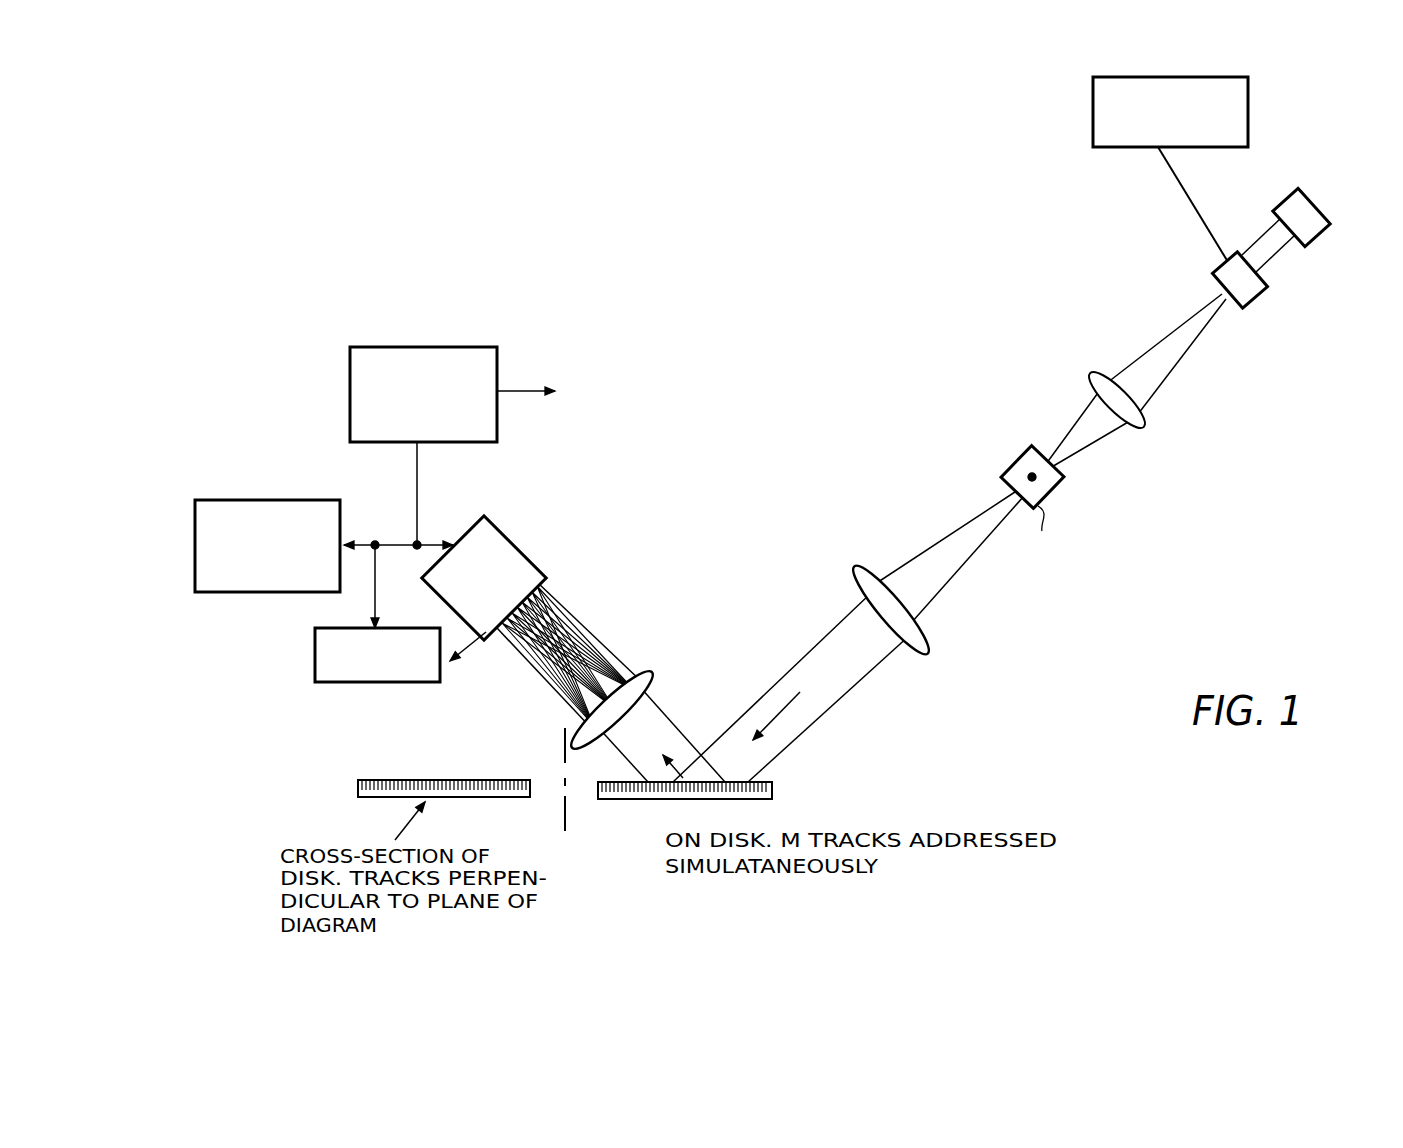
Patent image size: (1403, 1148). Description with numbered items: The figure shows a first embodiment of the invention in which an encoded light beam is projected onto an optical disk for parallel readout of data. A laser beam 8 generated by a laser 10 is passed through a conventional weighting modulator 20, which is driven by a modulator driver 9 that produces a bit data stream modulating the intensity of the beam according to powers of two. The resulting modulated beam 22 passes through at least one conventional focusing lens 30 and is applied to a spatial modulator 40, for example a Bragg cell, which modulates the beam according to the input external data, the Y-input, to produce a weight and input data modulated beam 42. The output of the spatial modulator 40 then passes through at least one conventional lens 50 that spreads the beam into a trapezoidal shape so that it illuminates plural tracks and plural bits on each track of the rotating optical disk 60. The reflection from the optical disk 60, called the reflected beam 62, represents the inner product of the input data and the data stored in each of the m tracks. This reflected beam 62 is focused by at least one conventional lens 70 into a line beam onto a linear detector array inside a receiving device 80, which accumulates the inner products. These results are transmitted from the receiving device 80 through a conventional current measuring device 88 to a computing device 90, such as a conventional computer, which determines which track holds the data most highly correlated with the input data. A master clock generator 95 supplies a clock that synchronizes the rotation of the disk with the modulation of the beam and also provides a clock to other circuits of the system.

The laser beam 8 is at (1266, 236).
The modulator driver 9 is at (1248, 107).
The laser 10 is at (1330, 167).
The weighting modulator 20 is at (1213, 273).
The modulated beam 22 is at (1183, 356).
The focusing lens 30 is at (1097, 381).
The spatial modulator 40 is at (1062, 468).
The weight and input data modulated beam 42 is at (964, 563).
The lens 50 is at (928, 652).
The optical disk 60 is at (772, 791).
The reflected beam 62 is at (685, 733).
The lens 70 is at (656, 675).
The receiving device 80 is at (520, 550).
The current measuring device 88 is at (315, 648).
The computing device 90 is at (288, 500).
The master clock generator 95 is at (442, 347).